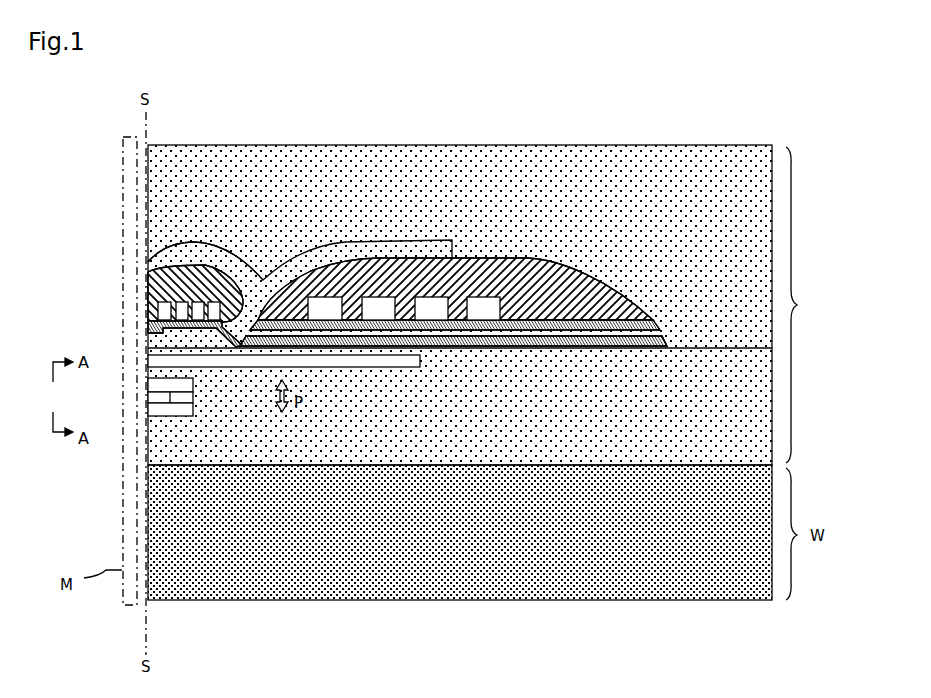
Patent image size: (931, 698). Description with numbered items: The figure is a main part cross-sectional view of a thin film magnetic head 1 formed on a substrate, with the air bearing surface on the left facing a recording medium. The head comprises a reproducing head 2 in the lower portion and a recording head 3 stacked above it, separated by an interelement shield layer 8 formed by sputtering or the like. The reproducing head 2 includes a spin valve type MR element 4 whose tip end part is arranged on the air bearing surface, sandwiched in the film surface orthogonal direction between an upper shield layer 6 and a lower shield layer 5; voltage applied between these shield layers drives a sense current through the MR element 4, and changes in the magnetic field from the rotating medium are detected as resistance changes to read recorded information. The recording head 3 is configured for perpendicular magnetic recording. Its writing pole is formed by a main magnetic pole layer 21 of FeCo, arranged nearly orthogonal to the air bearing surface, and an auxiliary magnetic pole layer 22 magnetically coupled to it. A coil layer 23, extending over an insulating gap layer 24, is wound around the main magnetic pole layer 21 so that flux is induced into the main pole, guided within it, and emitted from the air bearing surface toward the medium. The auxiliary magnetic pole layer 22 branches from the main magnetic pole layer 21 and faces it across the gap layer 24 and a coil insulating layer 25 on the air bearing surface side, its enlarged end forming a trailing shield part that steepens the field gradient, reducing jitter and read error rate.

The thin film magnetic head 1 is at (482, 305).
The reproducing head 2 is at (171, 399).
The recording head 3 is at (273, 240).
The MR element 4 is at (146, 398).
The lower shield layer 5 is at (146, 408).
The upper shield layer 6 is at (146, 386).
The interelement shield layer 8 is at (146, 362).
The main magnetic pole layer 21 is at (146, 327).
The auxiliary magnetic pole layer 22 is at (146, 262).
The coil layer 23 is at (204, 296).
The gap layer 24 is at (146, 308).
The coil insulating layer 25 is at (146, 282).